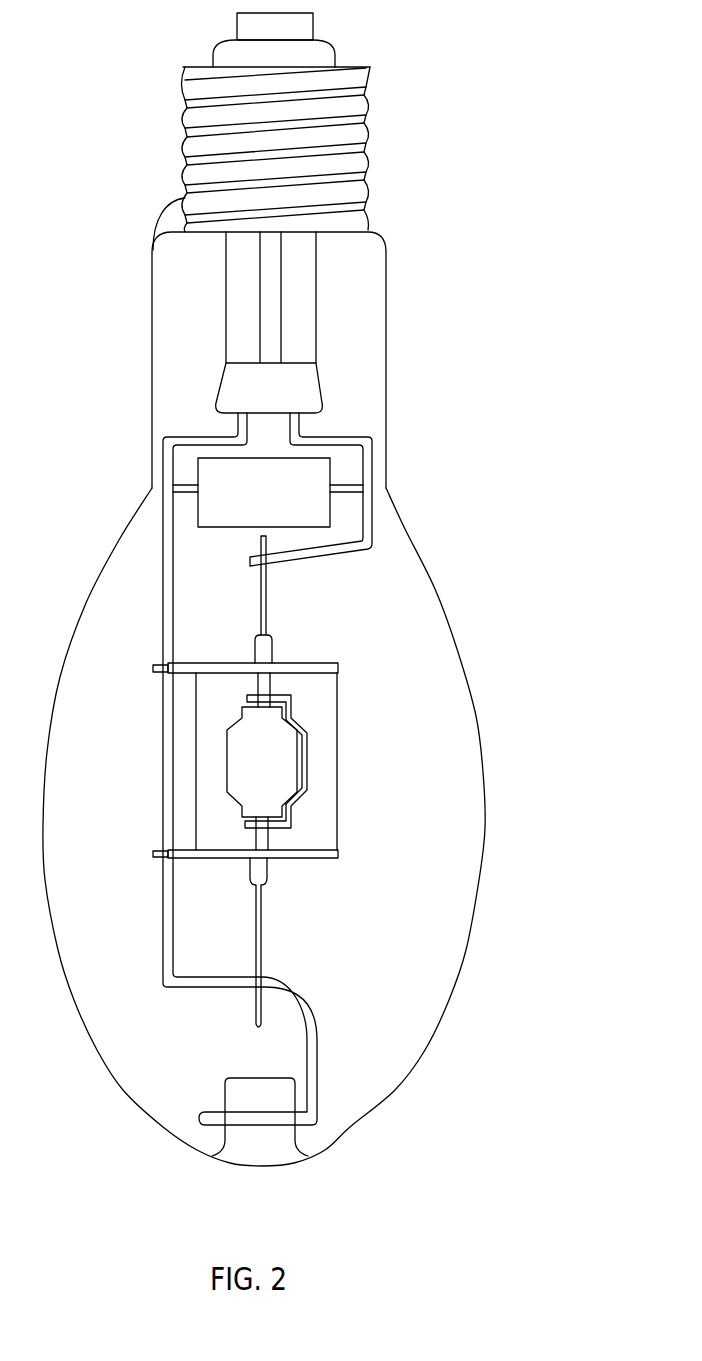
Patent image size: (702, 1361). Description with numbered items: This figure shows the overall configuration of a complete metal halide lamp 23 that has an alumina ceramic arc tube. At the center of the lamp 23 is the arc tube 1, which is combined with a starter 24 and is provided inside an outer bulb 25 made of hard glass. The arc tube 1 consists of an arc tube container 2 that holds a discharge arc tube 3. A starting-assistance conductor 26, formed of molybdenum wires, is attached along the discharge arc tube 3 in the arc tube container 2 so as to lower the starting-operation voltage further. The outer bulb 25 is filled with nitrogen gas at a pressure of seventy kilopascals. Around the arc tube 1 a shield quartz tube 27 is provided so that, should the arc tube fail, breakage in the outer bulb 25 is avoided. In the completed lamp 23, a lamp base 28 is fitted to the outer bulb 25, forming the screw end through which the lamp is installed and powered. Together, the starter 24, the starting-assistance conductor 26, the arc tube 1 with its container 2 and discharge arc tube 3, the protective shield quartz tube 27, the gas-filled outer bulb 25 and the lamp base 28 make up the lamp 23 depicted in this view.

The arc tube 1 is at (278, 875).
The arc tube container 2 is at (275, 782).
The discharge arc tube 3 is at (302, 748).
The lamp 23 is at (323, 589).
The starter 24 is at (318, 478).
The outer bulb 25 is at (482, 842).
The starting-assistance conductor 26 is at (290, 713).
The shield quartz tube 27 is at (338, 675).
The lamp base 28 is at (370, 165).